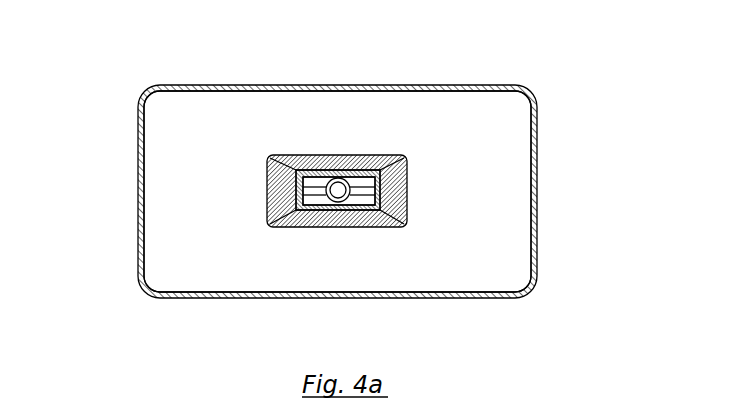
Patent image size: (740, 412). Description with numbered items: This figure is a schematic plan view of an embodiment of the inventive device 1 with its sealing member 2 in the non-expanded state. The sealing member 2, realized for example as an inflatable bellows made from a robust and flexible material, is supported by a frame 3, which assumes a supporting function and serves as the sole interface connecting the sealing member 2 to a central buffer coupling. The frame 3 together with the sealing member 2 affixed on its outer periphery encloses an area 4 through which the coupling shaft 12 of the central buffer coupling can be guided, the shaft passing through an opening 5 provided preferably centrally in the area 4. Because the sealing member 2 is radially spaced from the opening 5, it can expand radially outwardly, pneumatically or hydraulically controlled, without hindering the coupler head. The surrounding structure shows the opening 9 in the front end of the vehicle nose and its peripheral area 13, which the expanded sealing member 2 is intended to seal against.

The device 1 is at (332, 192).
The sealing member 2 is at (393, 188).
The frame 3 is at (313, 172).
The area 4 is at (360, 182).
The opening 5 is at (350, 198).
The opening 9 is at (167, 207).
The coupling shaft 12 is at (338, 190).
The peripheral area 13 is at (143, 100).